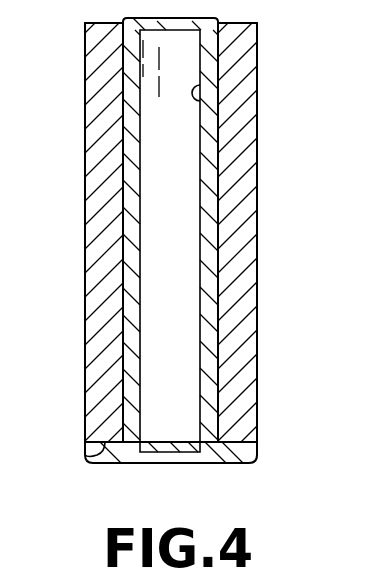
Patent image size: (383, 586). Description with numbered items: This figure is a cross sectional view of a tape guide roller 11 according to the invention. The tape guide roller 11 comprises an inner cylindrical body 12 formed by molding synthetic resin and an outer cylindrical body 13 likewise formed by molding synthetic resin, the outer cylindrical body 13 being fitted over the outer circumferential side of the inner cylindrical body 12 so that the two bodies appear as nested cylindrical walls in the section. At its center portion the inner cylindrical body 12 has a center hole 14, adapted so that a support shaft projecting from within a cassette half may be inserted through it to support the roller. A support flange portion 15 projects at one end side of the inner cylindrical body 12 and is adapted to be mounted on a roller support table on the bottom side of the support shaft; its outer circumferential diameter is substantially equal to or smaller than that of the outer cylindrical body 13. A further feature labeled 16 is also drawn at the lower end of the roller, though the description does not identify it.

The tape guide roller 11 is at (242, 42).
The inner cylindrical body 12 is at (130, 162).
The outer cylindrical body 13 is at (258, 184).
The center hole 14 is at (198, 101).
The support flange portion 15 is at (243, 452).
The groove 16 is at (93, 447).